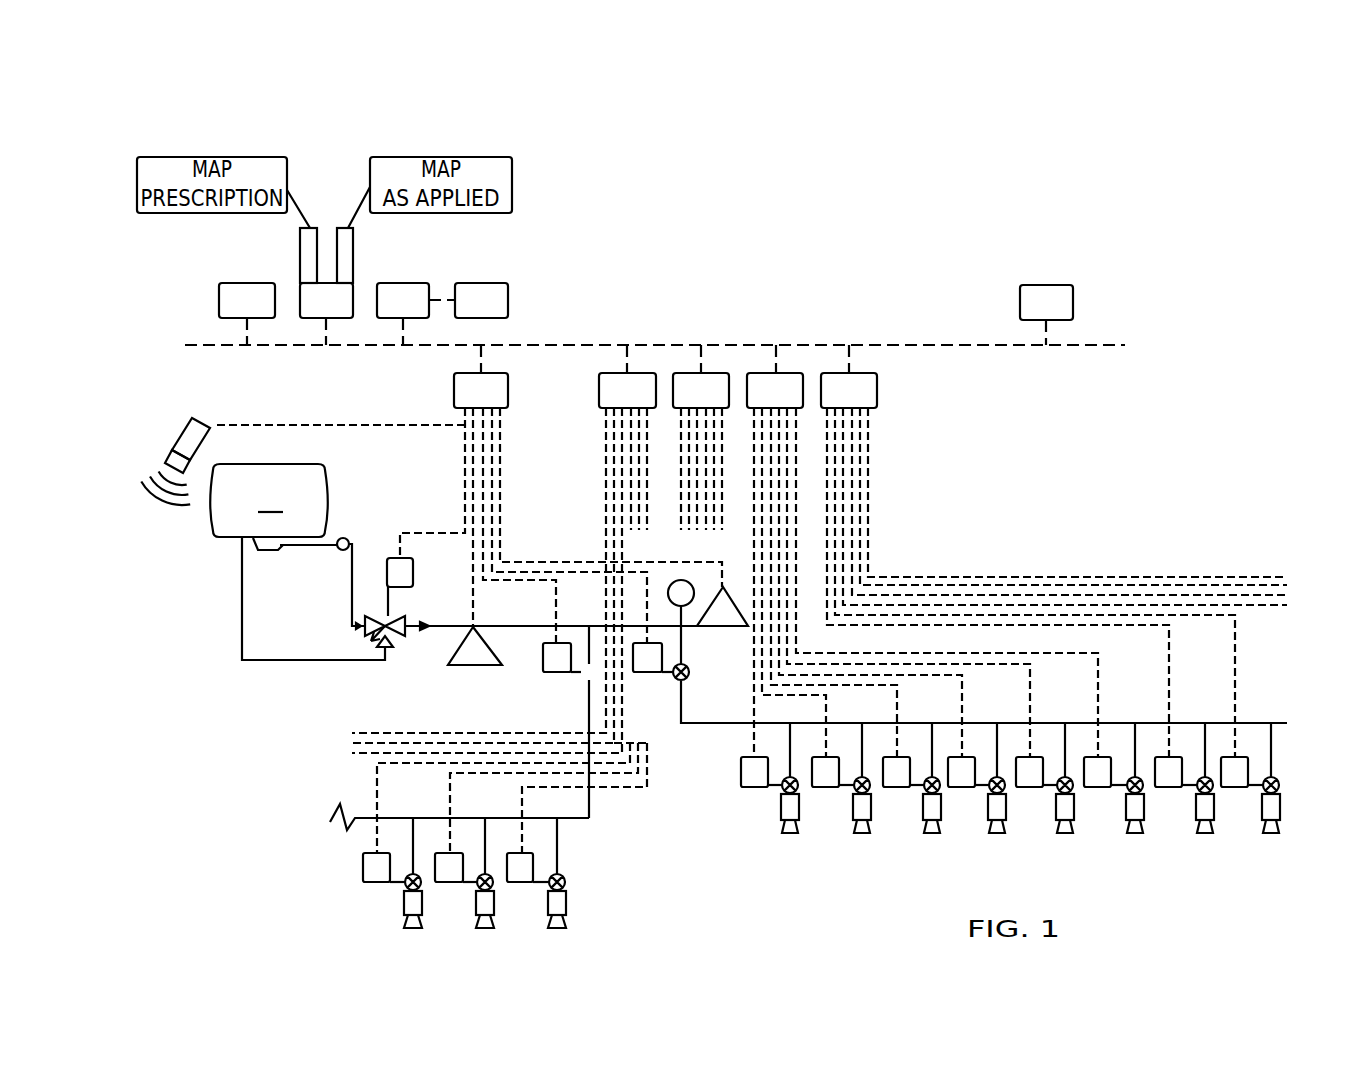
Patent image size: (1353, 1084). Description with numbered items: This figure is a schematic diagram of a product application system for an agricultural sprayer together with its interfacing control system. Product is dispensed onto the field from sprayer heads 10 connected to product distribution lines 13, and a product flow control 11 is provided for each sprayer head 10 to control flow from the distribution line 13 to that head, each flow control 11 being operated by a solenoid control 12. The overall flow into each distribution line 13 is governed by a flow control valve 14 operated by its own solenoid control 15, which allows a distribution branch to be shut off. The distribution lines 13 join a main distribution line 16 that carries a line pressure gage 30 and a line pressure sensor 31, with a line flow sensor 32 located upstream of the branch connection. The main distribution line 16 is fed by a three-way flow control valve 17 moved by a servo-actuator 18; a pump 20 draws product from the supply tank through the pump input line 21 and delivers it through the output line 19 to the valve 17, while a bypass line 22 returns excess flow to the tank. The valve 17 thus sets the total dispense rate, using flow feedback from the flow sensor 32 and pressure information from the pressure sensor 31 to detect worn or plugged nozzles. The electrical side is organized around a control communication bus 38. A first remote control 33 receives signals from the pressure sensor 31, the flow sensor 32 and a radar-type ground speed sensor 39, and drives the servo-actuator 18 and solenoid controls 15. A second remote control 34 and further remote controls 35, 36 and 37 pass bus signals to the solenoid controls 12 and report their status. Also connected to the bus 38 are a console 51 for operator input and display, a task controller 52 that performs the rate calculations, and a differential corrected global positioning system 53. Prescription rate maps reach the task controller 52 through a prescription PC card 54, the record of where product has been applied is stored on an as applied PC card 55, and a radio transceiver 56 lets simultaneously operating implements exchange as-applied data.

The sprayer head 10 is at (412, 929).
The product flow control 11 is at (405, 882).
The solenoid control 12 is at (535, 865).
The product distribution line 13 is at (584, 643).
The flow control valve 14 is at (690, 671).
The solenoid control 15 is at (648, 673).
The main distribution line 16 is at (522, 630).
The three-way flow control valve 17 is at (373, 639).
The servo-actuator 18 is at (385, 560).
The output line 19 is at (358, 556).
The pump 20 is at (343, 537).
The pump input line 21 is at (312, 546).
The bypass line 22 is at (315, 660).
The line pressure gage 30 is at (694, 596).
The line pressure sensor 31 is at (740, 610).
The line flow sensor 32 is at (460, 643).
The first remote control 33 is at (490, 373).
The second remote control 34 is at (640, 373).
The remote control 35 is at (718, 373).
The remote control 36 is at (791, 373).
The remote control 37 is at (864, 373).
The control communication bus 38 is at (1093, 347).
The ground speed sensor 39 is at (221, 397).
The console 51 is at (240, 283).
The task controller 52 is at (353, 297).
The differential corrected global positioning system 53 is at (400, 283).
The prescription PC card 54 is at (300, 236).
The as applied PC card 55 is at (327, 232).
The radio transceiver 56 is at (1046, 285).